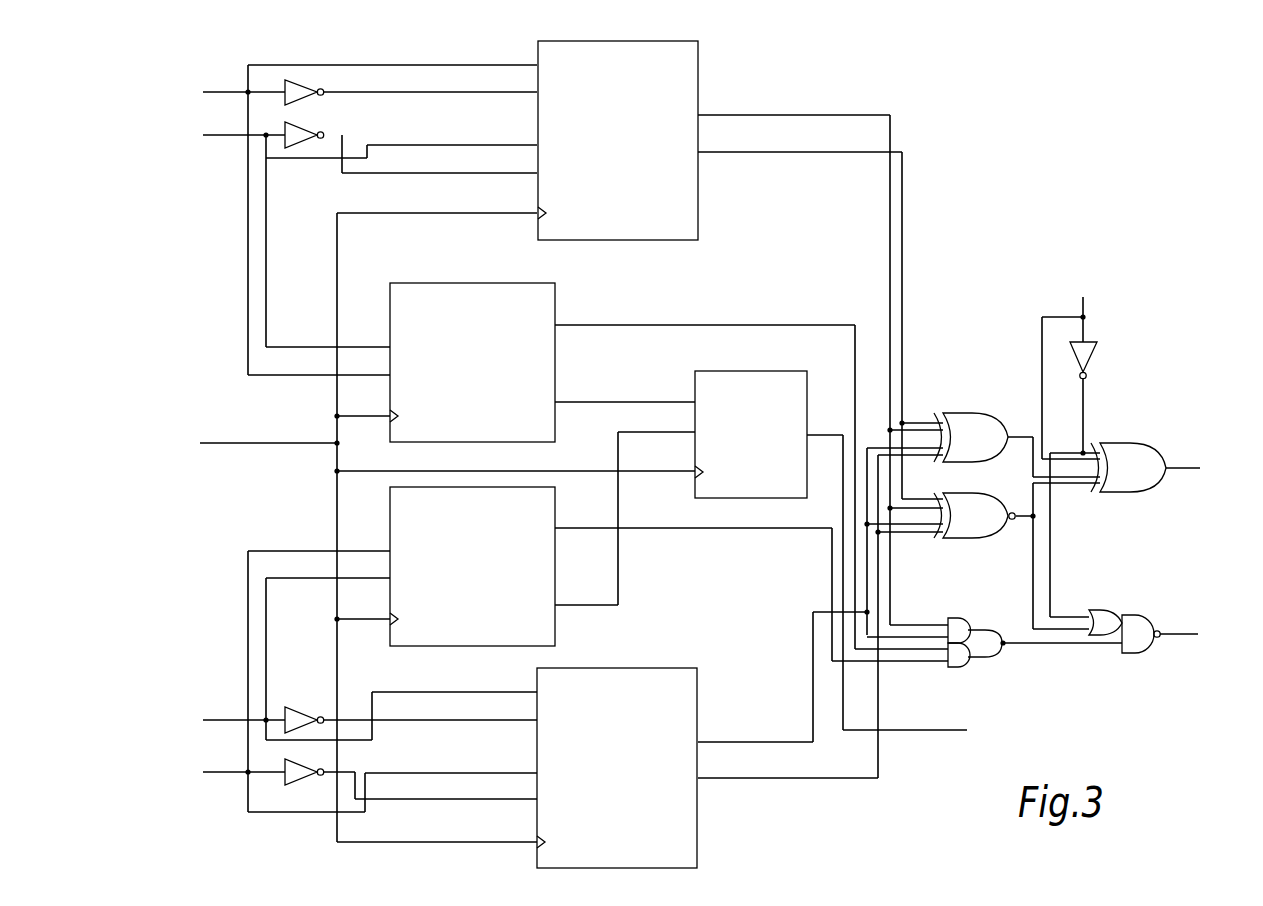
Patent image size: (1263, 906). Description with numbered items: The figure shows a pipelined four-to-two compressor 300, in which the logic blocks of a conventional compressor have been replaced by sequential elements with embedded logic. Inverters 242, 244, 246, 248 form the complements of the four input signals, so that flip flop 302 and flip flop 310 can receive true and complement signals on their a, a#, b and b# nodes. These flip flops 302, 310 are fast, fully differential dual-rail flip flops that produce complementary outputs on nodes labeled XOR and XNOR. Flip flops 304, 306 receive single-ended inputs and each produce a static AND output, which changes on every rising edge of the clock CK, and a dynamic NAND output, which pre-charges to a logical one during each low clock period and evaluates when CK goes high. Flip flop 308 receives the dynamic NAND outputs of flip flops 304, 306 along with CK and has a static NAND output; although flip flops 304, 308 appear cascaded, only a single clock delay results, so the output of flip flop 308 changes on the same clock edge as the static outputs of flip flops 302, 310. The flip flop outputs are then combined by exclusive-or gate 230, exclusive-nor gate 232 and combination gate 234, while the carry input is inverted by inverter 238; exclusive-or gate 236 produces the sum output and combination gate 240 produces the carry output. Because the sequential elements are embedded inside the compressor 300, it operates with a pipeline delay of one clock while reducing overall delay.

The compressor 300 is at (1138, 225).
The flip flop 302 is at (682, 41).
The flip flop 304 is at (540, 283).
The flip flop 306 is at (552, 487).
The flip flop 308 is at (788, 371).
The flip flop 310 is at (680, 668).
The exclusive-or gate 230 is at (970, 413).
The exclusive-nor gate 232 is at (972, 538).
The combination gate 234 is at (972, 618).
The exclusive-or gate 236 is at (1140, 446).
The inverter 238 is at (1090, 356).
The combination gate 240 is at (1105, 610).
The inverter 242 is at (308, 80).
The inverter 244 is at (311, 122).
The inverter 246 is at (308, 707).
The inverter 248 is at (305, 785).